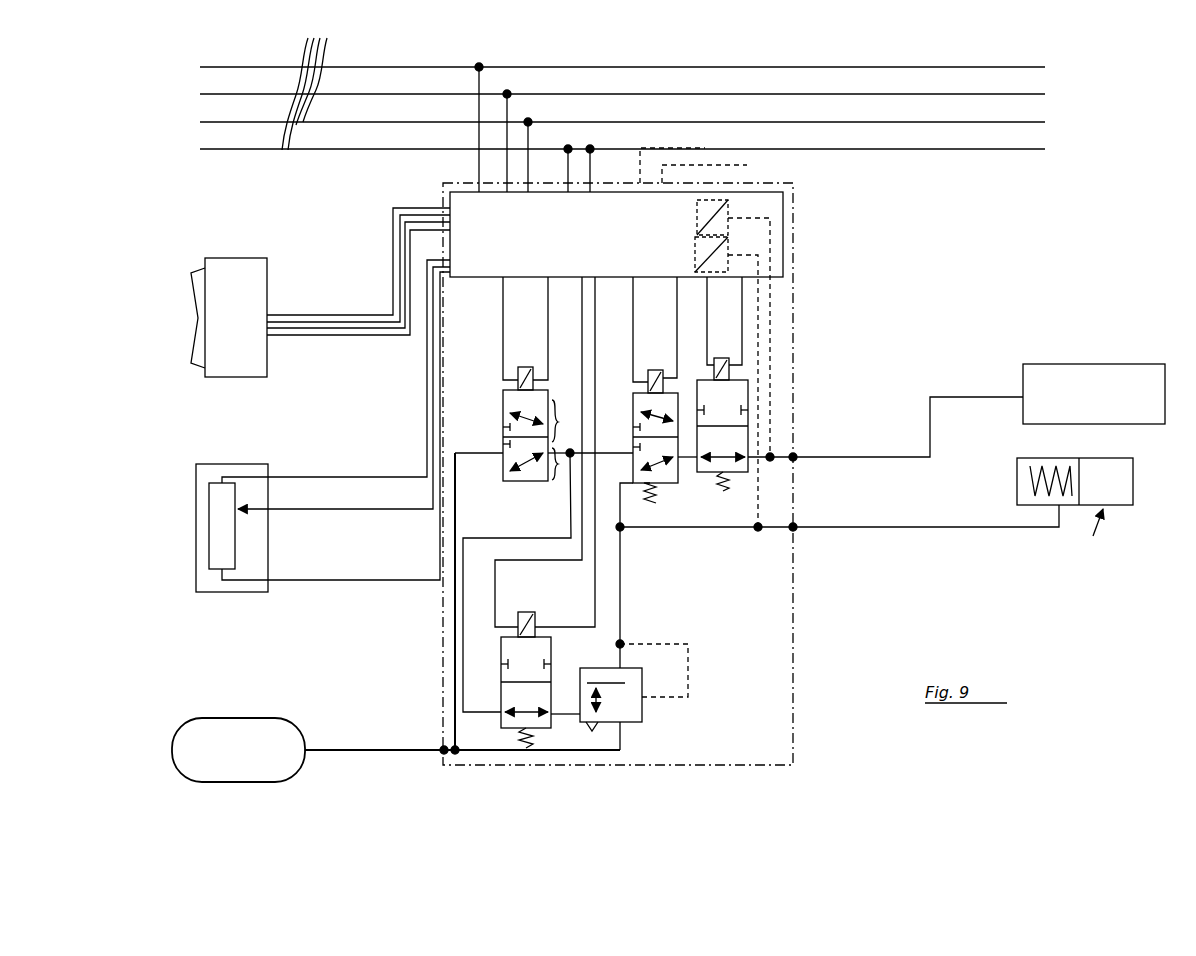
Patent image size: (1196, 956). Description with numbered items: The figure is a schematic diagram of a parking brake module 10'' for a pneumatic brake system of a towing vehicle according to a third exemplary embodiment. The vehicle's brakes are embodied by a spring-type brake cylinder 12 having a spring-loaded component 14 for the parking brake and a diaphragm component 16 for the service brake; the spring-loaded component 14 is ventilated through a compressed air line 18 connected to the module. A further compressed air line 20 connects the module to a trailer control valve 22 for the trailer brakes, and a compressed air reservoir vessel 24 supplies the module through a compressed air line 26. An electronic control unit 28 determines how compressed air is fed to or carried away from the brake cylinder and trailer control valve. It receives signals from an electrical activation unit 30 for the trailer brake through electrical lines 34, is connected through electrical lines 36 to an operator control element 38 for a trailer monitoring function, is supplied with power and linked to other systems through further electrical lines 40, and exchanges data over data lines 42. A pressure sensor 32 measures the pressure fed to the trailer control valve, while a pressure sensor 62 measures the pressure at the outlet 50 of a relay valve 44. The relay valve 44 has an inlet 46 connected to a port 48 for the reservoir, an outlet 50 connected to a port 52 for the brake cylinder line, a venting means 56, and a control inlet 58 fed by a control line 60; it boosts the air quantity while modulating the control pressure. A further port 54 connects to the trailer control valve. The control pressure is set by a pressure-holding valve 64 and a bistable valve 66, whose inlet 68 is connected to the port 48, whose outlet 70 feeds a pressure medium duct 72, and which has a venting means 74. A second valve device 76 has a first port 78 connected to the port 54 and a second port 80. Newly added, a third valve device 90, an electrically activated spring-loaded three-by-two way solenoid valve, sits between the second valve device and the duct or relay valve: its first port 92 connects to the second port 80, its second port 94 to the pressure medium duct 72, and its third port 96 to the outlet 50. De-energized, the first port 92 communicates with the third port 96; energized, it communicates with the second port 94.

The parking brake module 10'' is at (643, 474).
The spring-type brake cylinder 12 is at (1093, 533).
The spring-loaded component 14 is at (1020, 458).
The diaphragm component 16 is at (1133, 480).
The compressed air line 18 is at (912, 530).
The compressed air line 20 is at (847, 452).
The trailer control valve 22 is at (1071, 402).
The compressed air reservoir vessel 24 is at (275, 782).
The compressed air line 26 is at (368, 752).
The electronic control unit 28 is at (484, 224).
The electrical activation unit 30 is at (196, 496).
The pressure sensor 32 is at (712, 210).
The electrical lines 34 is at (300, 476).
The electrical lines 36 is at (305, 312).
The operator control element 38 is at (210, 258).
The electrical lines 40 is at (622, 103).
The data lines 42 is at (735, 160).
The relay valve 44 is at (642, 712).
The inlet 46 is at (620, 735).
The port 48 is at (440, 756).
The outlet 50 is at (625, 670).
The port 52 is at (795, 533).
The port 54 is at (795, 463).
The venting means 56 is at (592, 731).
The control inlet 58 is at (578, 690).
The control line 60 is at (560, 740).
The pressure sensor 62 is at (722, 252).
The pressure-holding valve 64 is at (535, 637).
The bistable valve 66 is at (503, 392).
The inlet 68 is at (503, 446).
The outlet 70 is at (551, 447).
The pressure medium duct 72 is at (568, 530).
The venting means 74 is at (505, 470).
The second valve device 76 is at (702, 378).
The first port 78 is at (757, 465).
The second port 80 is at (700, 468).
The third valve device 90 is at (633, 395).
The first port 92 is at (682, 460).
The second port 94 is at (633, 445).
The third port 96 is at (632, 470).